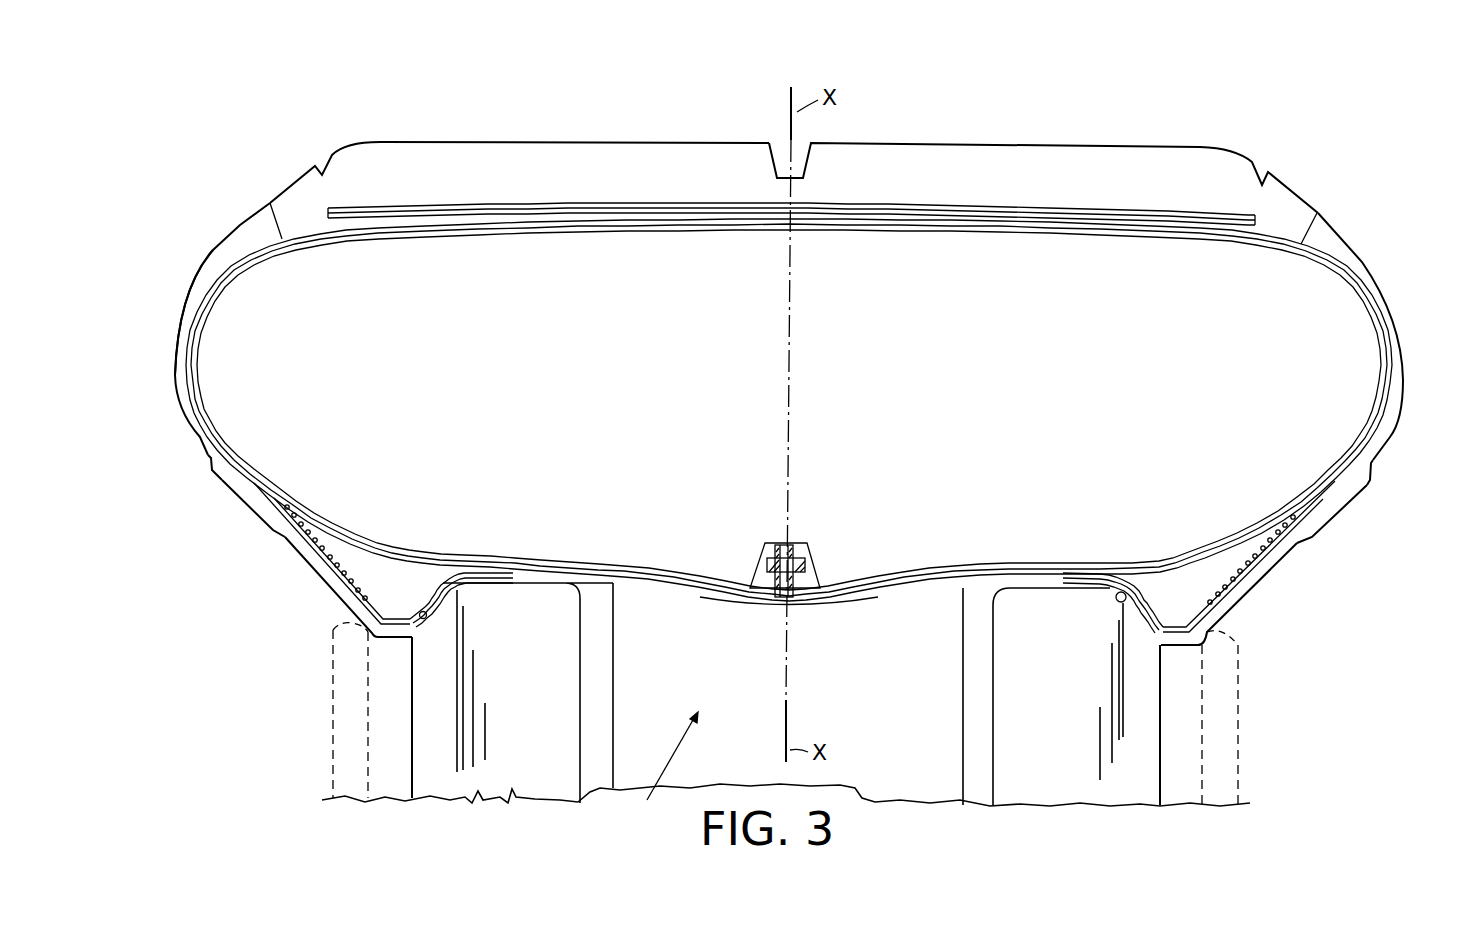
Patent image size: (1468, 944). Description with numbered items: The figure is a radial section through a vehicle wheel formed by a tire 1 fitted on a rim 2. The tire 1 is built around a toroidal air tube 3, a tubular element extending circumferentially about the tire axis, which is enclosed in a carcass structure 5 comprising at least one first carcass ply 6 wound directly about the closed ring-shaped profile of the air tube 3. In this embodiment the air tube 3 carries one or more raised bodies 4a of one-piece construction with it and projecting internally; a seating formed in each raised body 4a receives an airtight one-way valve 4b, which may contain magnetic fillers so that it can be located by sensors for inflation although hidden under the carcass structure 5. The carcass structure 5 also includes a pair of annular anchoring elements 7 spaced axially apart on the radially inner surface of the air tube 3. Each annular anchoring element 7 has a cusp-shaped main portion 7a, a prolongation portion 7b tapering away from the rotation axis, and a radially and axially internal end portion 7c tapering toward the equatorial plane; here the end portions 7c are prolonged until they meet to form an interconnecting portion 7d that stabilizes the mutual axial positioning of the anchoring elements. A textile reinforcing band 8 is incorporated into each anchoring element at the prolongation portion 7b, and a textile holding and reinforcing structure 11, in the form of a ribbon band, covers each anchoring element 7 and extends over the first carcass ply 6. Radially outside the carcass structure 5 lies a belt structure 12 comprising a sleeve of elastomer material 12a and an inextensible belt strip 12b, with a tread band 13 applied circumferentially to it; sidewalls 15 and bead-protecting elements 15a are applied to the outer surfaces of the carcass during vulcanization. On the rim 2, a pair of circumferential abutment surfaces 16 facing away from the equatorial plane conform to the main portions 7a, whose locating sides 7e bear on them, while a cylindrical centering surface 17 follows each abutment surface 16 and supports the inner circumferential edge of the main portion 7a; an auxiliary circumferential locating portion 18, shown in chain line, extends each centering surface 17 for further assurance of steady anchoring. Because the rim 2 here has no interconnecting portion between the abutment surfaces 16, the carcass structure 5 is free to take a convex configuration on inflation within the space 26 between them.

The tire 1 is at (1392, 142).
The rim 2 is at (1152, 822).
The air tube 3 is at (402, 232).
The raised body 4a is at (808, 548).
The one-way valve 4b is at (770, 560).
The carcass structure 5 is at (205, 280).
The first carcass ply 6 is at (200, 318).
The annular anchoring element 7 is at (327, 595).
The main portion 7a is at (390, 610).
The prolongation portion 7b is at (275, 500).
The radially- and axially-internal end portion 7c is at (437, 560).
The interconnecting portion 7d is at (742, 604).
The locating side 7e is at (427, 604).
The textile reinforcing band 8 is at (319, 566).
The textile holding and reinforcing structure 11 is at (252, 484).
The belt structure 12 is at (1163, 218).
The sleeve of elastomer material 12a is at (513, 212).
The inextensible belt strip 12b is at (618, 204).
The tread band 13 is at (1020, 157).
The sidewall 15 is at (172, 367).
The bead-protecting element 15a is at (233, 481).
The circumferential abutment surface 16 is at (437, 575).
The cylindrical centering surface 17 is at (392, 790).
The auxiliary circumferential locating portion 18 is at (340, 658).
The space 26 is at (662, 776).